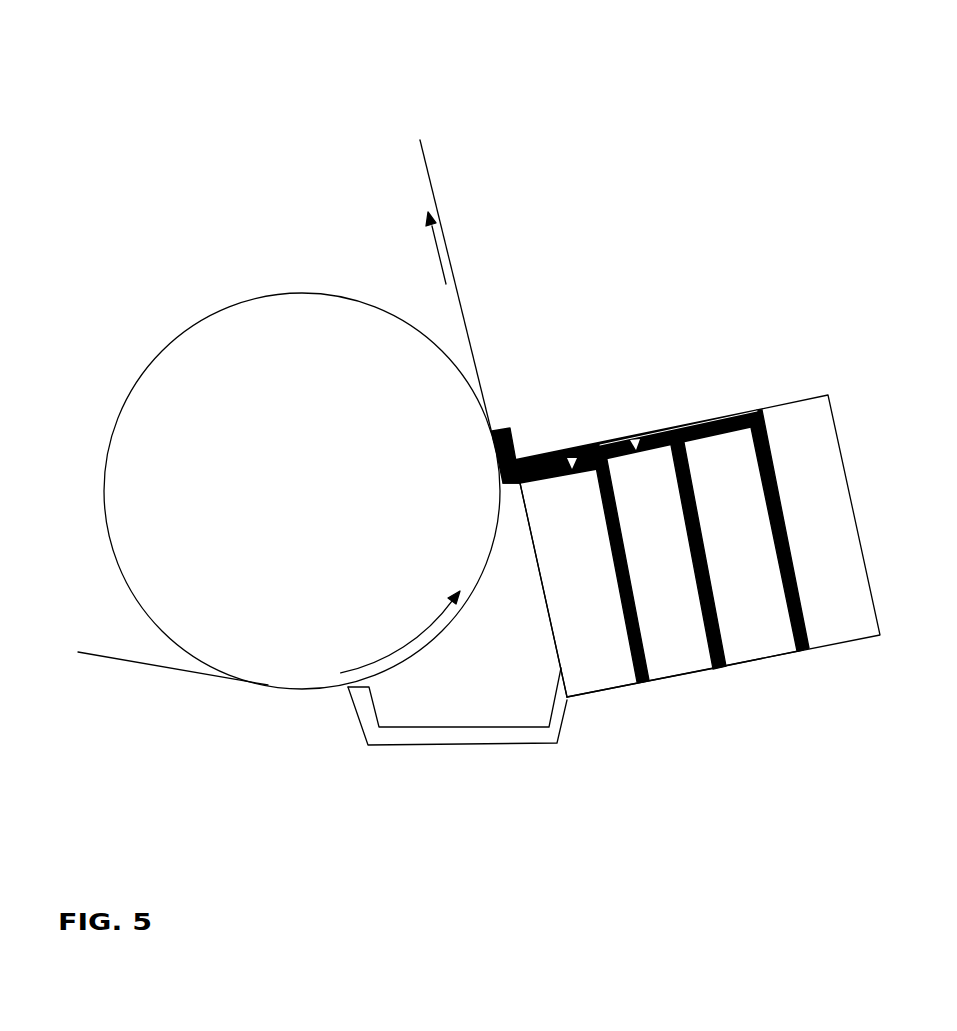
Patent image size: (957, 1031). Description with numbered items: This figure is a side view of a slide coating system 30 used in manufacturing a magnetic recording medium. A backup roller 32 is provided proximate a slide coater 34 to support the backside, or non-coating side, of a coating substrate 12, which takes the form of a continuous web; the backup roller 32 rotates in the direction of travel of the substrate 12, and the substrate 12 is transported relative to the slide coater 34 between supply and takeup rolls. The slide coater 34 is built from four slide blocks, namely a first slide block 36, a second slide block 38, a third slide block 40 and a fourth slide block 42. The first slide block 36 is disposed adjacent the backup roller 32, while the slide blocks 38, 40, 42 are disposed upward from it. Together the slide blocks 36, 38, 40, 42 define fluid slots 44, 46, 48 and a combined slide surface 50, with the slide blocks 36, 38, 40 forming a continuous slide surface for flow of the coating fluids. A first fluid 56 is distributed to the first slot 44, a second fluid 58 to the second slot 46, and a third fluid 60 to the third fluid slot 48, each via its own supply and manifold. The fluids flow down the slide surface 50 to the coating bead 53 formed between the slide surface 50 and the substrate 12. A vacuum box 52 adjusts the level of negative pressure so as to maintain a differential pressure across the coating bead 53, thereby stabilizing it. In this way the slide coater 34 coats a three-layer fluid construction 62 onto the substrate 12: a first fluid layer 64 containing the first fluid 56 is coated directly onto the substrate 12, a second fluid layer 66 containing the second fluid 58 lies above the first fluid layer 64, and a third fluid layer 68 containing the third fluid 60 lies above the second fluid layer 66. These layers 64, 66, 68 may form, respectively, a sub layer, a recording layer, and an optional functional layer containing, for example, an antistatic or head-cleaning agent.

The coating substrate 12 is at (194, 678).
The slide coating system 30 is at (660, 107).
The backup roller 32 is at (148, 370).
The slide coater 34 is at (508, 558).
The first slide block 36 is at (600, 700).
The second slide block 38 is at (686, 676).
The third slide block 40 is at (772, 663).
The fourth slide block 42 is at (855, 648).
The first fluid slot 44 is at (643, 703).
The second fluid slot 46 is at (731, 685).
The third fluid slot 48 is at (805, 665).
The combined slide surface 50 is at (556, 482).
The vacuum box 52 is at (455, 722).
The coating bead 53 is at (510, 496).
The first fluid 56 is at (612, 507).
The second fluid 58 is at (688, 482).
The third fluid 60 is at (770, 460).
The three-layer fluid construction 62 is at (497, 420).
The first fluid layer 64 is at (572, 457).
The second fluid layer 66 is at (634, 440).
The third fluid layer 68 is at (688, 416).